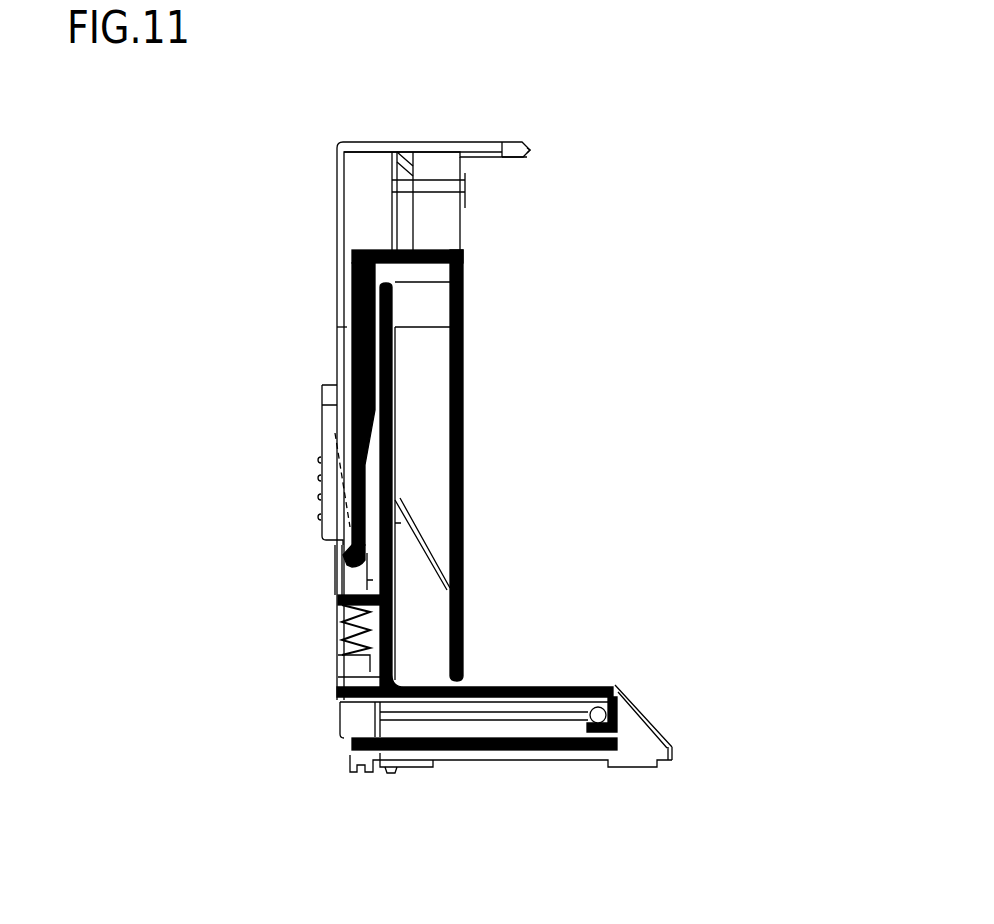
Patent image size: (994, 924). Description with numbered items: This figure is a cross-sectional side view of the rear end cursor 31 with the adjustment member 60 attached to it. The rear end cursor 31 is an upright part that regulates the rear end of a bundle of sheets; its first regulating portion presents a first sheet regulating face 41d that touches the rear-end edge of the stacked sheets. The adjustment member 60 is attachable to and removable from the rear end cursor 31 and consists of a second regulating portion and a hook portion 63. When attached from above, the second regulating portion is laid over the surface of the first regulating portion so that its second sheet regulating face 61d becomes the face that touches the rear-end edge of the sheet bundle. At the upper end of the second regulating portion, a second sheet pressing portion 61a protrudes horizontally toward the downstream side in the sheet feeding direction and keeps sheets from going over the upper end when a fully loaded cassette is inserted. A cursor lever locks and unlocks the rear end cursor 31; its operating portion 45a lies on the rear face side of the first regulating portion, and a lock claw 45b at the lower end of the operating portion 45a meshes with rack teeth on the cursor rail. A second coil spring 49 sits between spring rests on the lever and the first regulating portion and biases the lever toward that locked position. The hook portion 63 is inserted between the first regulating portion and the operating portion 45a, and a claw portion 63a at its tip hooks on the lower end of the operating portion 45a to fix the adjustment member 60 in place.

The rear end cursor 31 is at (317, 198).
The second sheet pressing portion 61a is at (512, 143).
The adjustment member 60 is at (482, 280).
The second sheet regulating face 61d is at (462, 396).
The hook portion 63 is at (352, 373).
The claw portion 63a is at (344, 561).
The operating portion 45a is at (318, 458).
The first sheet regulating face 41d is at (395, 473).
The second coil spring 49 is at (375, 633).
The lock claw 45b is at (350, 767).